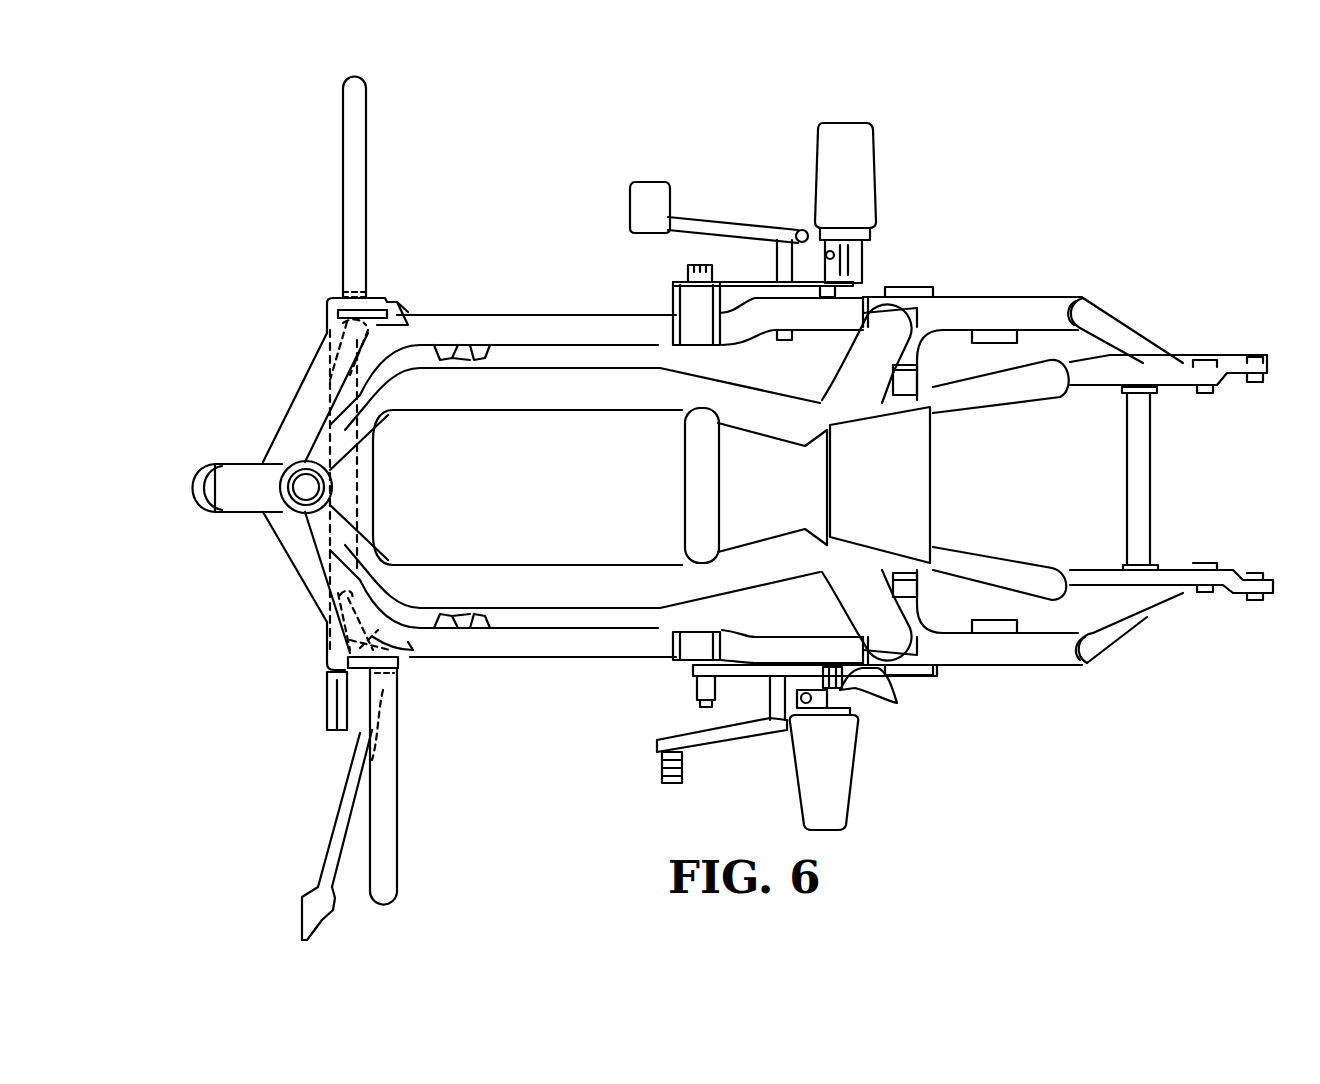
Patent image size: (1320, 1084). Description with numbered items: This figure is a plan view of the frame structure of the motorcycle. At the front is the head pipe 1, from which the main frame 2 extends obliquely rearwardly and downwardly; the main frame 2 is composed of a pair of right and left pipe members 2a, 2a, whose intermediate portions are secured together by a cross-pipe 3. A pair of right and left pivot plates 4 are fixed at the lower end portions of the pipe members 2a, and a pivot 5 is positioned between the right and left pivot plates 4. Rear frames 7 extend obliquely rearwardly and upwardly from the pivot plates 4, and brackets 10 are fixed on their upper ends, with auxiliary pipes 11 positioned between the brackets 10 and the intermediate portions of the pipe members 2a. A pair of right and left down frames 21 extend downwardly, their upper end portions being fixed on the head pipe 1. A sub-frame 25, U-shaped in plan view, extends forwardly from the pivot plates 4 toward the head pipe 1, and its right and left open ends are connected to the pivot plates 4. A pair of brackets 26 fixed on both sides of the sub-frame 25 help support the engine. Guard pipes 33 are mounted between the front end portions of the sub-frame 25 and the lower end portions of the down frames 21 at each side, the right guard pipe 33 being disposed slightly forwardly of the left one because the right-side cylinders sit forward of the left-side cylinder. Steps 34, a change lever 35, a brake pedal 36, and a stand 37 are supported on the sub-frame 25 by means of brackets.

The head pipe 1 is at (222, 465).
The main frame 2 is at (510, 390).
The pipe members 2a is at (572, 388).
The cross-pipe 3 is at (706, 490).
The pivot plates 4 is at (990, 302).
The pivot 5 is at (915, 588).
The rear frames 7 is at (1110, 325).
The brackets 10 is at (1202, 383).
The auxiliary pipes 11 is at (1015, 390).
The down frames 21 is at (290, 415).
The sub-frame 25 is at (568, 322).
The brackets 26 is at (440, 348).
The guard pipes 33 is at (367, 133).
The steps 34 is at (866, 165).
The change lever 35 is at (705, 742).
The brake pedal 36 is at (718, 225).
The stand 37 is at (332, 845).